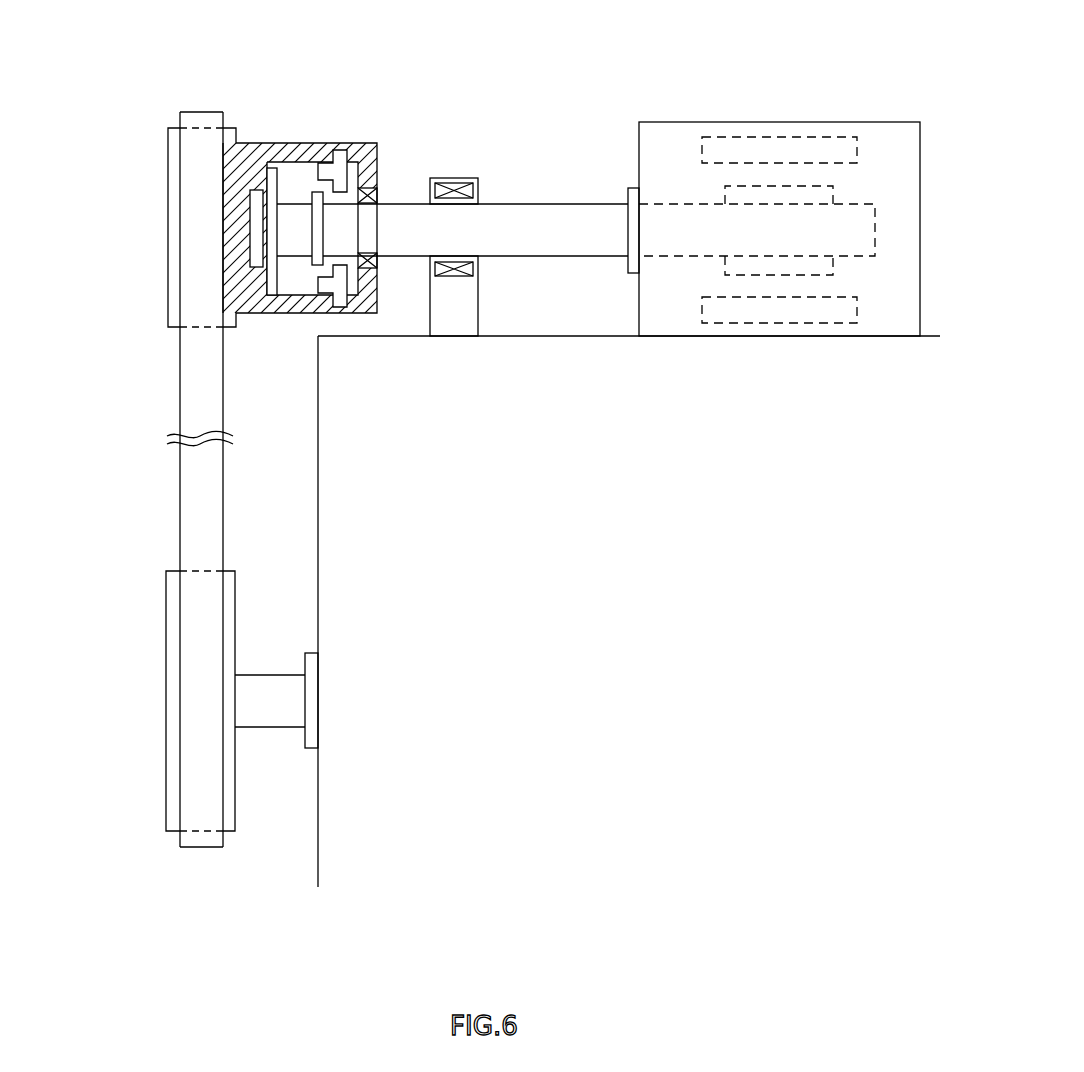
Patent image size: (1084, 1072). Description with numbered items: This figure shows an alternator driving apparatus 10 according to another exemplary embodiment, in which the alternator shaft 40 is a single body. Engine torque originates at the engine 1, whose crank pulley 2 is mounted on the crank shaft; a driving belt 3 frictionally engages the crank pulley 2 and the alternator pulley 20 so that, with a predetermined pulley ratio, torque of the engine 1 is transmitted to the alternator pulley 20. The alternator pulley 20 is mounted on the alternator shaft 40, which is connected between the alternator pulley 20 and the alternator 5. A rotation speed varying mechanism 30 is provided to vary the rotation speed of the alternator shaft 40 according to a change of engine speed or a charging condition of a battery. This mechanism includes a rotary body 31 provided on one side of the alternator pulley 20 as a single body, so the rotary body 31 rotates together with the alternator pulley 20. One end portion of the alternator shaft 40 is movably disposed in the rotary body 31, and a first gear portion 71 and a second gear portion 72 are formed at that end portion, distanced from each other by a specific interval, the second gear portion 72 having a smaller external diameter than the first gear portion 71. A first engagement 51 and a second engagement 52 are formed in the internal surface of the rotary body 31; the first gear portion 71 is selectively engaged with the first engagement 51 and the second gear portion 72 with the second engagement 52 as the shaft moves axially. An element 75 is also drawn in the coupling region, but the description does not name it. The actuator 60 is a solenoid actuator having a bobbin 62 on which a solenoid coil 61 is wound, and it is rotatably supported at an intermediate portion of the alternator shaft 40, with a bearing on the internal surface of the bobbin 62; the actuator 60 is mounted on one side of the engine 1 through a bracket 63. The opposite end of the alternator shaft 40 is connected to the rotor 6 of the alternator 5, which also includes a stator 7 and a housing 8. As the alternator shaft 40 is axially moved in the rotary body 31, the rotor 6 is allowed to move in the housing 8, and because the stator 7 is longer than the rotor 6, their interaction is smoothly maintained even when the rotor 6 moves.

The engine 1 is at (318, 862).
The crank pulley 2 is at (176, 741).
The driving belt 3 is at (190, 500).
The alternator 5 is at (774, 184).
The rotor 6 is at (740, 183).
The stator 7 is at (785, 136).
The housing 8 is at (904, 121).
The alternator driving apparatus 10 is at (124, 362).
The alternator pulley 20 is at (156, 303).
The rotation speed varying mechanism 30 is at (294, 180).
The rotary body 31 is at (291, 143).
The alternator shaft 40 is at (400, 222).
The first engagement 51 is at (245, 270).
The second engagement 52 is at (341, 136).
The actuator 60 is at (488, 220).
The solenoid coil 61 is at (468, 192).
The bobbin 62 is at (448, 178).
The bracket 63 is at (470, 312).
The first gear portion 71 is at (258, 192).
The second gear portion 72 is at (312, 264).
The coupling plate 75 is at (270, 229).